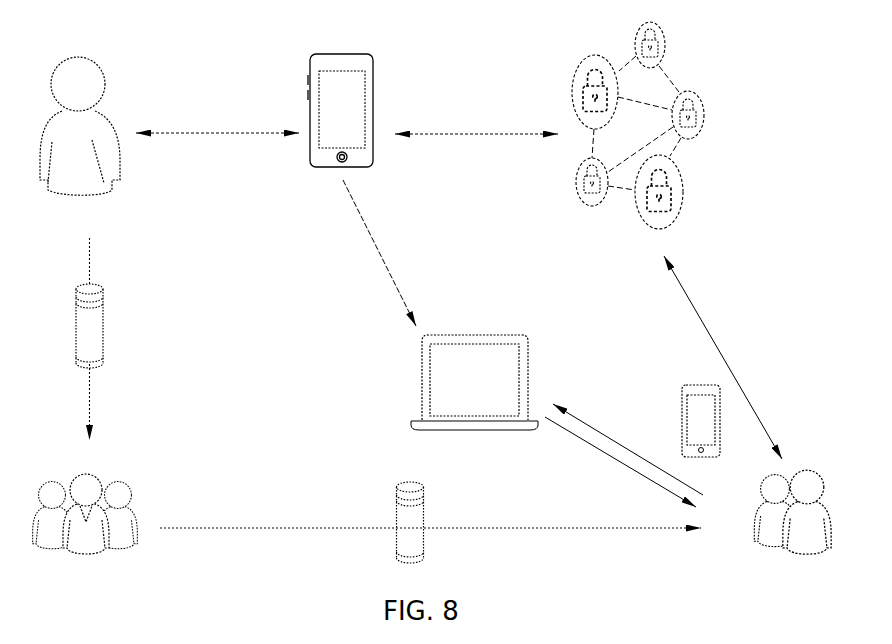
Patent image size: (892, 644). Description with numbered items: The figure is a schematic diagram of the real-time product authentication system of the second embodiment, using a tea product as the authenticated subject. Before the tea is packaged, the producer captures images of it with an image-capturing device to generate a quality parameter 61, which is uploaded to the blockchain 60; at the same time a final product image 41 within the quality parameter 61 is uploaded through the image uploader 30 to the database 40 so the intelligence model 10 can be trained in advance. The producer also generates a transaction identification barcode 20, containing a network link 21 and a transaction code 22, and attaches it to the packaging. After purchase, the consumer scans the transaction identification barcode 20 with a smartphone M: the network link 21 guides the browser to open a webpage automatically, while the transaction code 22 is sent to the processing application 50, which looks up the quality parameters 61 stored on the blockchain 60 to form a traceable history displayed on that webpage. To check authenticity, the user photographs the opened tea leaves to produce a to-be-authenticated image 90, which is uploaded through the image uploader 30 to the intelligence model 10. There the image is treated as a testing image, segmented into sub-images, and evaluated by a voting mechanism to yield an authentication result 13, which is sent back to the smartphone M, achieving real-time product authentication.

The intelligence model 10 is at (423, 382).
The image uploader 30 is at (423, 382).
The database 40 is at (423, 382).
The processing application 50 is at (422, 381).
The authentication result 13 is at (620, 462).
The transaction identification barcode 20 is at (76, 300).
The network link 21 is at (430, 546).
The transaction code 22 is at (430, 546).
The final product image 41 is at (380, 253).
The blockchain 60 is at (703, 93).
The quality parameter 61 is at (476, 116).
The to-be-authenticated image 90 is at (628, 447).
The smartphone M is at (697, 388).